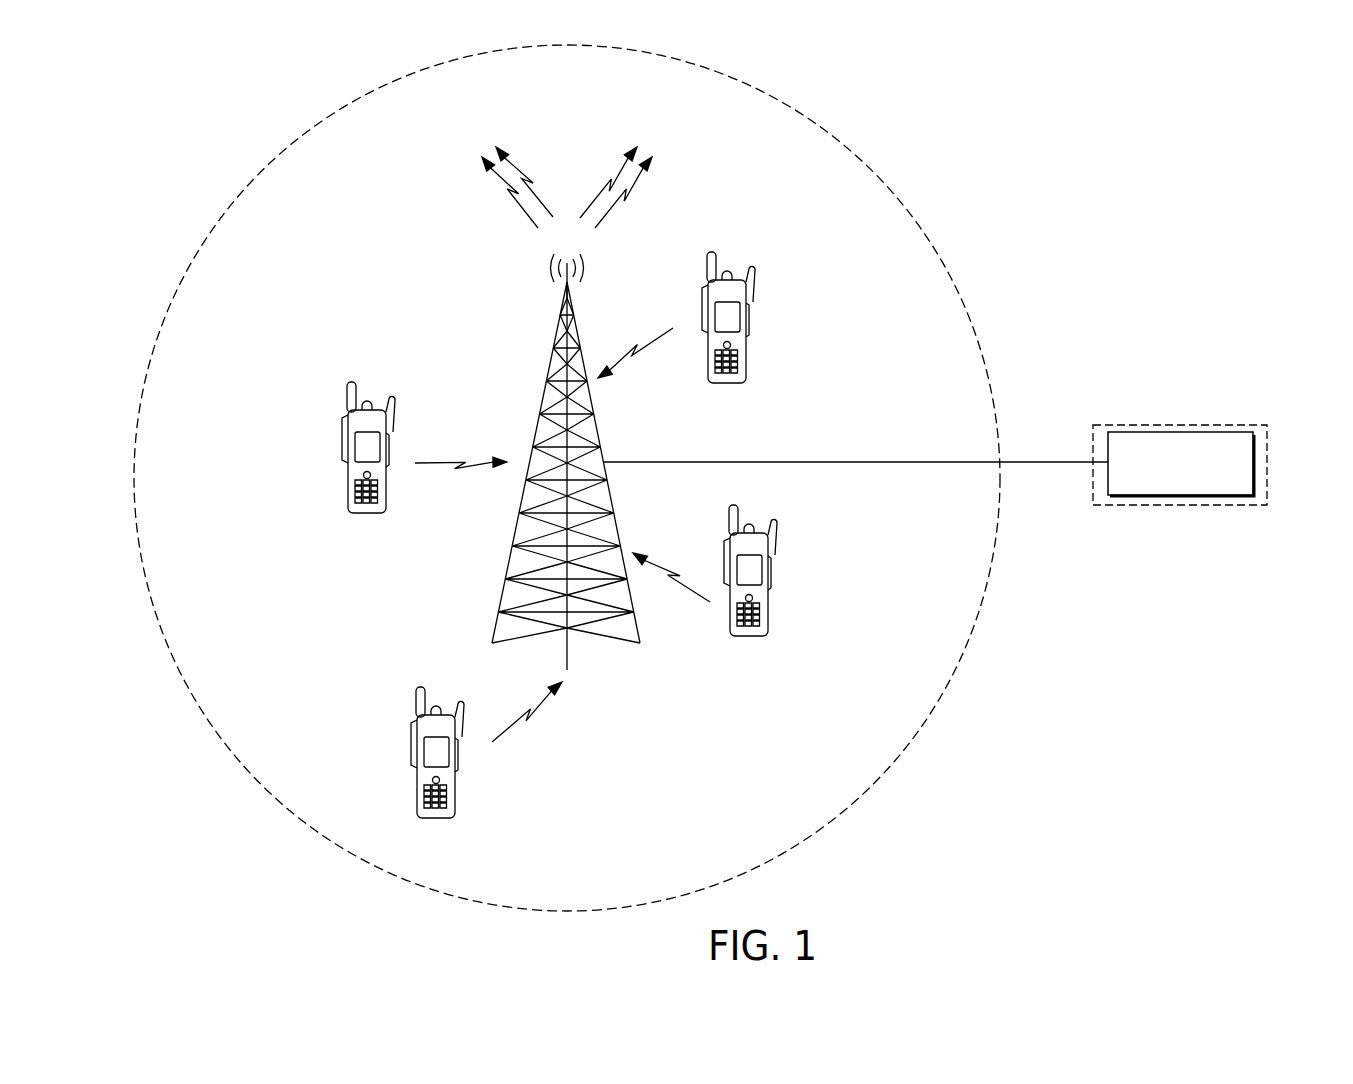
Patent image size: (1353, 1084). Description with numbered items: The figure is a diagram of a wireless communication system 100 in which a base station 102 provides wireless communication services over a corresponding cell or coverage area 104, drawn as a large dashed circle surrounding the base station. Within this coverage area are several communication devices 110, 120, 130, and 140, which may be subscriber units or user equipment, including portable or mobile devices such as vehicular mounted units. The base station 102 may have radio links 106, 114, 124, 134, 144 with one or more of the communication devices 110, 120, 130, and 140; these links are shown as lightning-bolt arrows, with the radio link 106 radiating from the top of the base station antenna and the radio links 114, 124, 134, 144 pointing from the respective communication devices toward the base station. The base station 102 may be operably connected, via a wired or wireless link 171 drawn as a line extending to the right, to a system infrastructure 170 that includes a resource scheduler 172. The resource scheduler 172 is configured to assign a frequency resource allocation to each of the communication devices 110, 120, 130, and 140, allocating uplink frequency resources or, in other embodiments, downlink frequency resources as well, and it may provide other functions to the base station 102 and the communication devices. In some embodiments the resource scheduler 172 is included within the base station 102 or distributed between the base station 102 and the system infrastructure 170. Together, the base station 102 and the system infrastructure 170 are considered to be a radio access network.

The communication system 100 is at (970, 152).
The base station 102 is at (540, 412).
The coverage area 104 is at (133, 452).
The radio link 106 is at (581, 172).
The communication device 110 is at (350, 478).
The radio link 114 is at (440, 464).
The communication device 120 is at (418, 782).
The radio link 124 is at (513, 724).
The communication device 130 is at (768, 612).
The radio link 134 is at (672, 578).
The communication device 140 is at (747, 355).
The radio link 144 is at (640, 352).
The system infrastructure 170 is at (1211, 492).
The link 171 is at (860, 465).
The resource scheduler 172 is at (1254, 462).